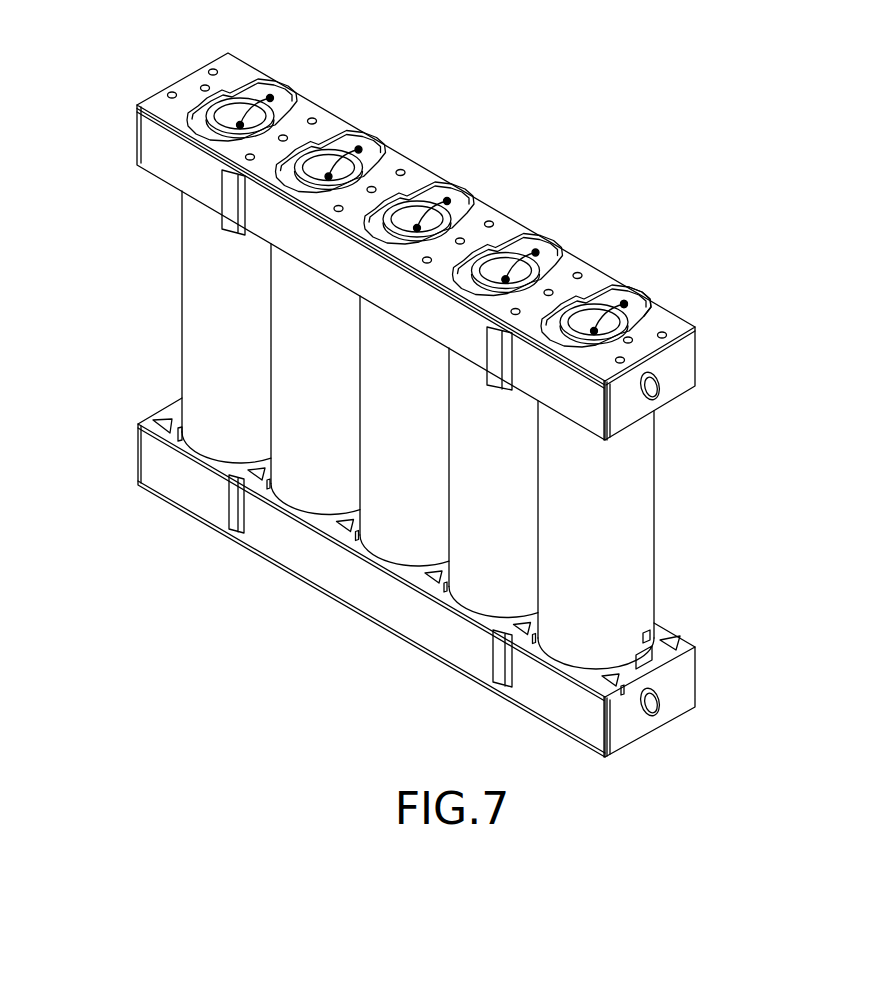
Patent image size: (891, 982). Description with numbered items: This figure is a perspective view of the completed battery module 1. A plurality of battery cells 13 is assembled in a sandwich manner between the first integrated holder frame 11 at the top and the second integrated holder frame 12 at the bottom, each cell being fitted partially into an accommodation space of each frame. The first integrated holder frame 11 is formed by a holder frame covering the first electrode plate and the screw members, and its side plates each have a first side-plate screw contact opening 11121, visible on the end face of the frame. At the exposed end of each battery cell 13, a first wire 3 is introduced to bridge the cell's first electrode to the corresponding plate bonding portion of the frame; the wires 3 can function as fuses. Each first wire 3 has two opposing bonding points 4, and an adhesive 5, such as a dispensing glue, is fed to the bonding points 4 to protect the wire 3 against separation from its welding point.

The battery module 1 is at (492, 405).
The first integrated holder frame 11 is at (471, 246).
The second integrated holder frame 12 is at (704, 677).
The battery cell 13 is at (665, 520).
The first wire 3 is at (506, 277).
The bonding point 4 is at (623, 301).
The adhesive 5 is at (646, 317).
The first side-plate screw contact opening 11121 is at (660, 380).